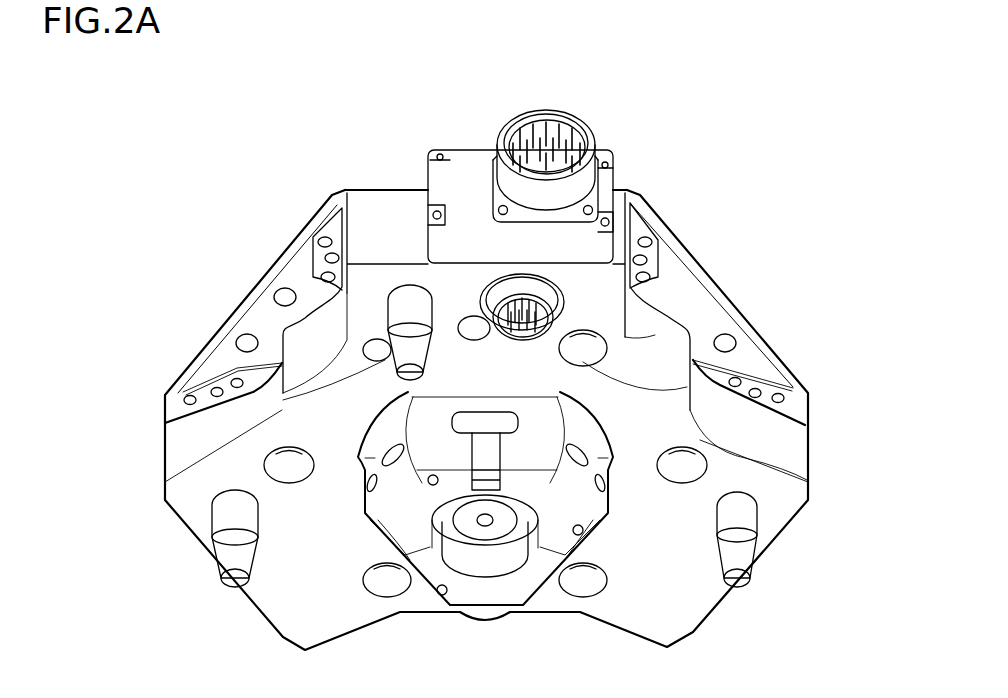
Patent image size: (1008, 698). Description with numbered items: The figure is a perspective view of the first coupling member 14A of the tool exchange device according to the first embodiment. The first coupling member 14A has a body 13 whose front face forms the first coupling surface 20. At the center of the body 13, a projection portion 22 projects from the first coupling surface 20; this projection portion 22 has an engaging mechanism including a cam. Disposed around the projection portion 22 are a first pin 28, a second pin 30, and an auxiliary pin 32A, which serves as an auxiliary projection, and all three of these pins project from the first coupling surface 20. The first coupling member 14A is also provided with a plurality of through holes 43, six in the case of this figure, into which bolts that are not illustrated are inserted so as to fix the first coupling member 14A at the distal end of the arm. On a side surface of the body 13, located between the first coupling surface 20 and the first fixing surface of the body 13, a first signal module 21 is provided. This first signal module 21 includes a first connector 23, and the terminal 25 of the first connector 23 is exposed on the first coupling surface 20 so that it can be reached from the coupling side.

The first coupling member 14A is at (749, 144).
The body 13 is at (790, 453).
The first coupling surface 20 is at (655, 525).
The first signal module 21 is at (467, 158).
The projection portion 22 is at (582, 540).
The first connector 23 is at (530, 290).
The terminal 25 is at (590, 345).
The first pin 28 is at (227, 520).
The second pin 30 is at (745, 518).
The auxiliary pin 32A is at (385, 358).
The through holes 43 is at (263, 465).